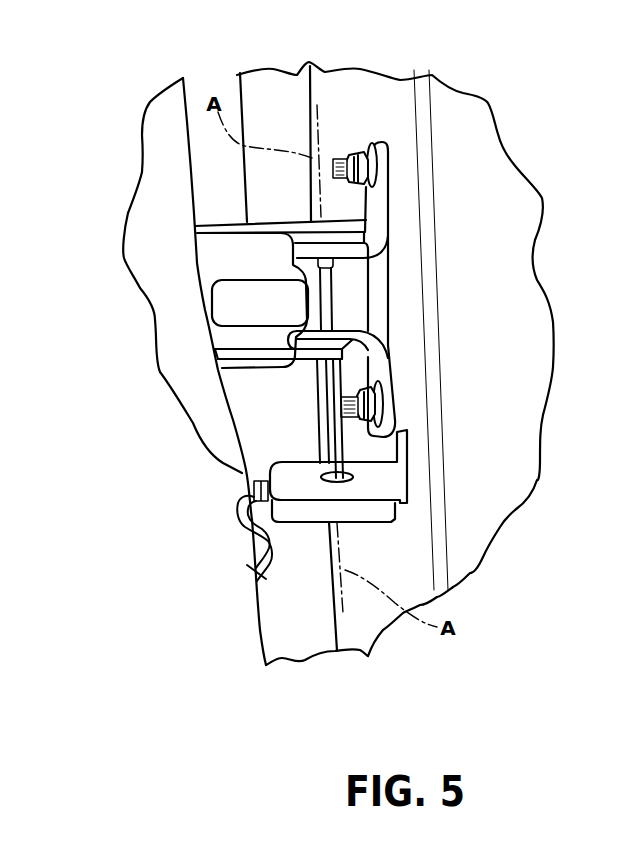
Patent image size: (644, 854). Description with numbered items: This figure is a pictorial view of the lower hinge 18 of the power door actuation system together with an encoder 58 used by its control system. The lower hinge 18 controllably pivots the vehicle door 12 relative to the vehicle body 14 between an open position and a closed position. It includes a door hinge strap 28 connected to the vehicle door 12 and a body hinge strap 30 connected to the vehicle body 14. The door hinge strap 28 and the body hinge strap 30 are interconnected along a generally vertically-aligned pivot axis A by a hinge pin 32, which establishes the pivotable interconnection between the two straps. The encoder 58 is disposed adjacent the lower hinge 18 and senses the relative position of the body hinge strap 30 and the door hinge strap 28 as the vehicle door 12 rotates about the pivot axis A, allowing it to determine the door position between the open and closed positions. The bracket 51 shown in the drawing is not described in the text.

The vehicle door 12 is at (493, 198).
The vehicle body 14 is at (137, 243).
The lower hinge 18 is at (265, 378).
The door hinge strap 28 is at (380, 205).
The body hinge strap 30 is at (228, 330).
The hinge pin 32 is at (327, 296).
The bracket 51 is at (297, 222).
The encoder 58 is at (385, 522).